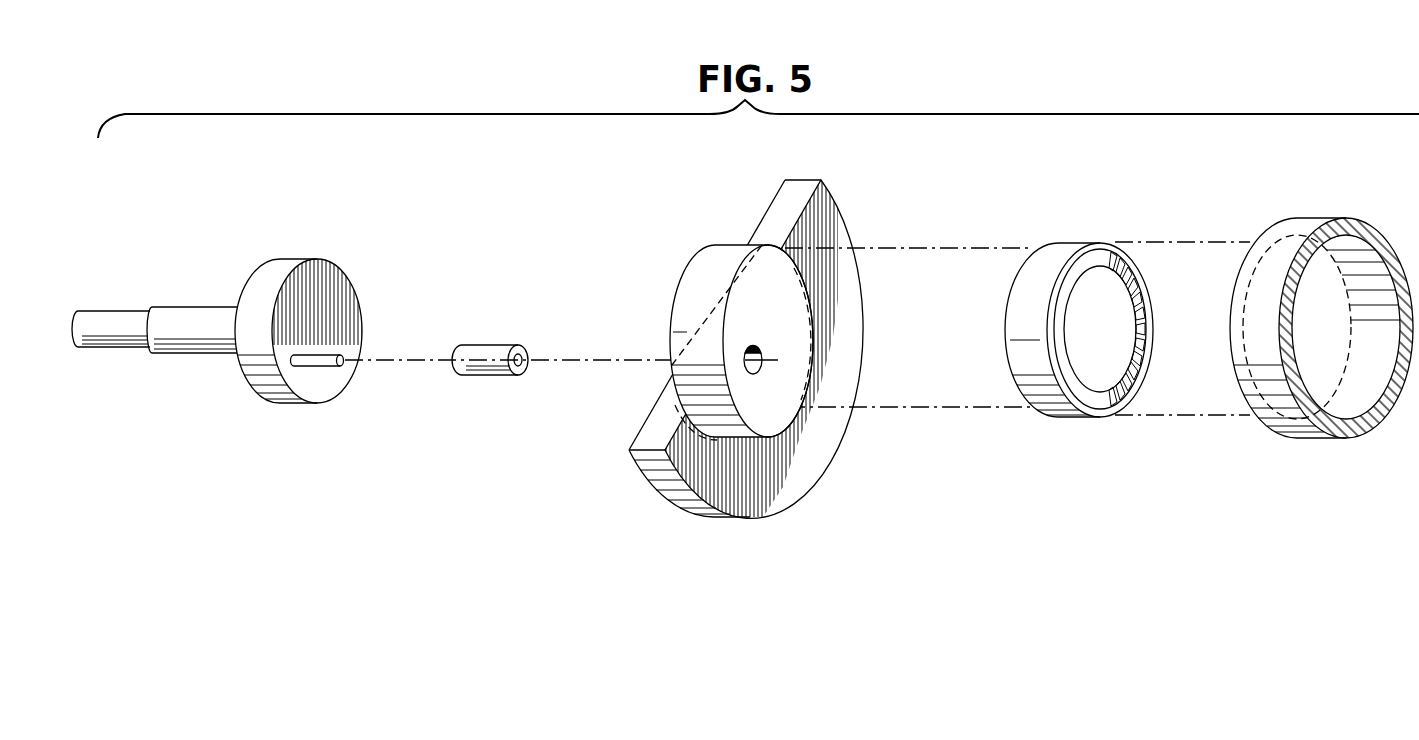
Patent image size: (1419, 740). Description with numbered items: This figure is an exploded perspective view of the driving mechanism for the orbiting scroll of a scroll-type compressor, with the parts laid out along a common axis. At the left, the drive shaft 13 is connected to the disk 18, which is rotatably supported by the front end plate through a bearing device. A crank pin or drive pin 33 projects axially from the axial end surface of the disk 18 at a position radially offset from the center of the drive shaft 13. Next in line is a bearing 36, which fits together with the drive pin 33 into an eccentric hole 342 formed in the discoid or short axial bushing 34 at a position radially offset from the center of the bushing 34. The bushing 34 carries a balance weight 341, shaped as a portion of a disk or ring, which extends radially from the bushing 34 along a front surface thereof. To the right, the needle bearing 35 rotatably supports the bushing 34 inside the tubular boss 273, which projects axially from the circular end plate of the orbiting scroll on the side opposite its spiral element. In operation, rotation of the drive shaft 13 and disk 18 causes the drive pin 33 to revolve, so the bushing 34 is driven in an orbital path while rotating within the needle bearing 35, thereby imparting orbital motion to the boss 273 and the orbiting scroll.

The drive shaft 13 is at (122, 304).
The disk 18 is at (276, 270).
The drive pin 33 is at (325, 353).
The bearing 36 is at (497, 345).
The bushing 34 is at (718, 258).
The balance weight 341 is at (800, 472).
The eccentric hole 342 is at (755, 346).
The needle bearing 35 is at (1057, 252).
The tubular boss 273 is at (1297, 225).